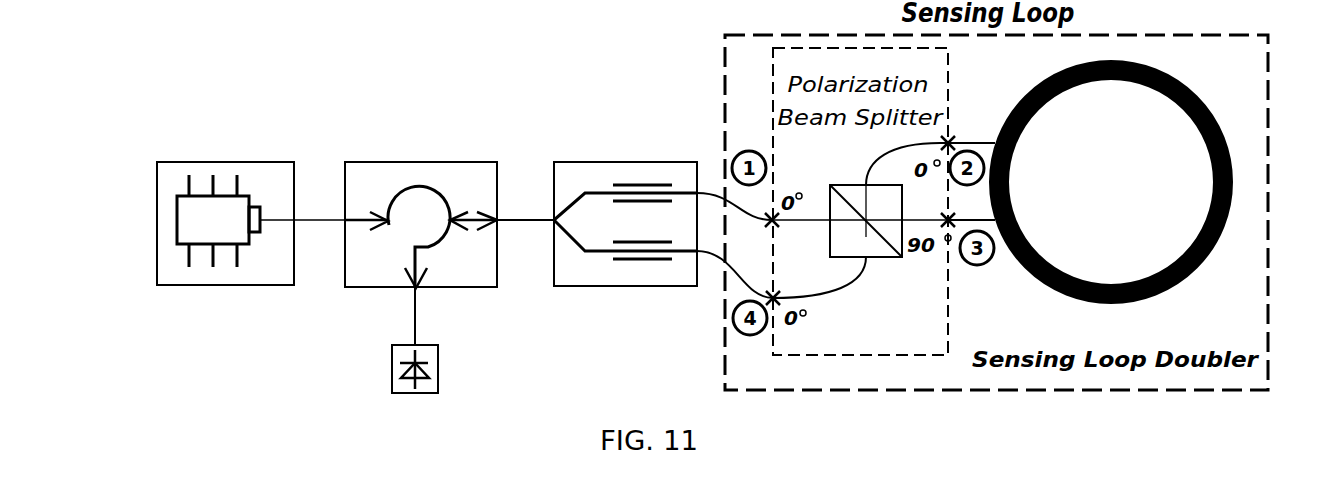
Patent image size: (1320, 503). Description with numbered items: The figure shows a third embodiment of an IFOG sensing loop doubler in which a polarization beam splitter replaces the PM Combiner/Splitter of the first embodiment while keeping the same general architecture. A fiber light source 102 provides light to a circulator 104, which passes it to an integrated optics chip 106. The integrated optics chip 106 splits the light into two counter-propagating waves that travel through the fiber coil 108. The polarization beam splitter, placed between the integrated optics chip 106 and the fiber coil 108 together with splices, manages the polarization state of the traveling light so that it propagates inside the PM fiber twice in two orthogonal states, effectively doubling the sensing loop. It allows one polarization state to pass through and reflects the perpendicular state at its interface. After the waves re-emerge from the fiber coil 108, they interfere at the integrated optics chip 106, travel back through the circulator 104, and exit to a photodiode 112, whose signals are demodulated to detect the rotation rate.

The fiber light source (FLS) 102 is at (225, 288).
The circulator 104 is at (437, 288).
The integrated optics chip (IOC) 106 is at (623, 288).
The fiber coil 108 is at (1183, 80).
The photodiode 112 is at (440, 371).